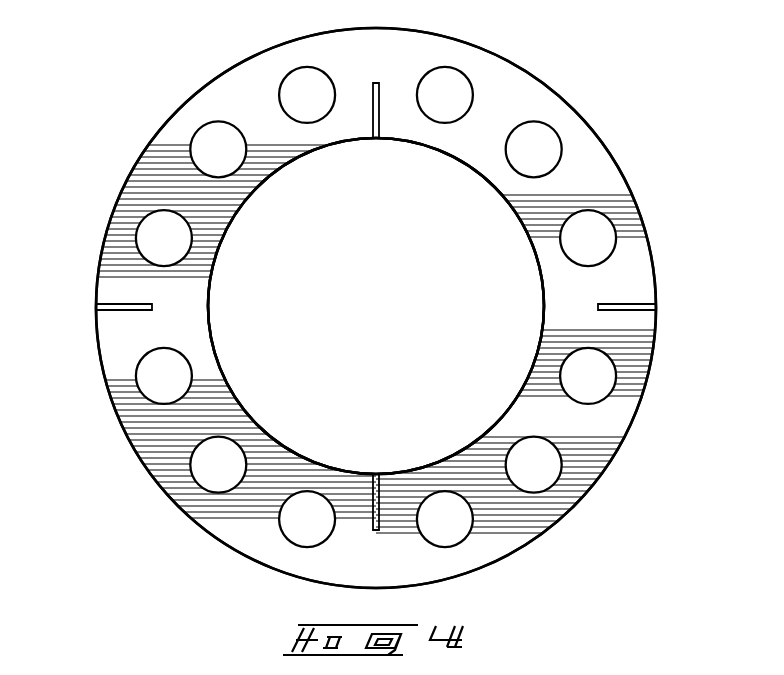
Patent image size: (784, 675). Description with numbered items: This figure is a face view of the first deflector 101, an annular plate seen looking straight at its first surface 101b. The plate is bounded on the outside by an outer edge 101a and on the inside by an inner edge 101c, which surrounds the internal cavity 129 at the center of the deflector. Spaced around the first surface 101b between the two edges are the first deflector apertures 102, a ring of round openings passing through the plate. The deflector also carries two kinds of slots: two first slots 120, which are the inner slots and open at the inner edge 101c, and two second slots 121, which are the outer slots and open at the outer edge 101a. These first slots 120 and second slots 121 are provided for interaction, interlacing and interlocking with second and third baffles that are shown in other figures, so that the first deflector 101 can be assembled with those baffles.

The first deflector 101 is at (602, 168).
The outer edge 101a is at (183, 100).
The first surface 101b is at (400, 62).
The inner edge 101c is at (509, 398).
The first deflector apertures 102 is at (448, 83).
The first slots 120 is at (375, 146).
The second slots 121 is at (97, 306).
The internal cavity 129 is at (405, 311).